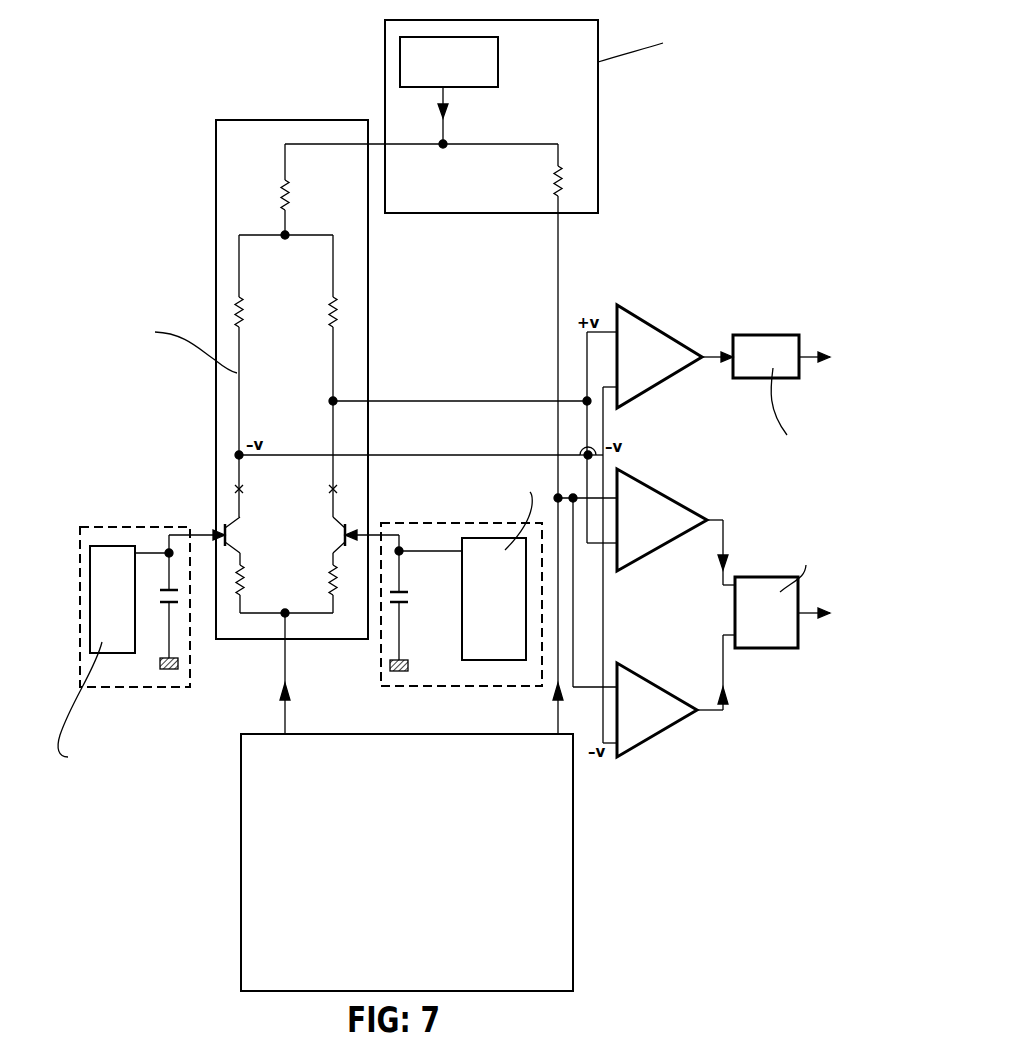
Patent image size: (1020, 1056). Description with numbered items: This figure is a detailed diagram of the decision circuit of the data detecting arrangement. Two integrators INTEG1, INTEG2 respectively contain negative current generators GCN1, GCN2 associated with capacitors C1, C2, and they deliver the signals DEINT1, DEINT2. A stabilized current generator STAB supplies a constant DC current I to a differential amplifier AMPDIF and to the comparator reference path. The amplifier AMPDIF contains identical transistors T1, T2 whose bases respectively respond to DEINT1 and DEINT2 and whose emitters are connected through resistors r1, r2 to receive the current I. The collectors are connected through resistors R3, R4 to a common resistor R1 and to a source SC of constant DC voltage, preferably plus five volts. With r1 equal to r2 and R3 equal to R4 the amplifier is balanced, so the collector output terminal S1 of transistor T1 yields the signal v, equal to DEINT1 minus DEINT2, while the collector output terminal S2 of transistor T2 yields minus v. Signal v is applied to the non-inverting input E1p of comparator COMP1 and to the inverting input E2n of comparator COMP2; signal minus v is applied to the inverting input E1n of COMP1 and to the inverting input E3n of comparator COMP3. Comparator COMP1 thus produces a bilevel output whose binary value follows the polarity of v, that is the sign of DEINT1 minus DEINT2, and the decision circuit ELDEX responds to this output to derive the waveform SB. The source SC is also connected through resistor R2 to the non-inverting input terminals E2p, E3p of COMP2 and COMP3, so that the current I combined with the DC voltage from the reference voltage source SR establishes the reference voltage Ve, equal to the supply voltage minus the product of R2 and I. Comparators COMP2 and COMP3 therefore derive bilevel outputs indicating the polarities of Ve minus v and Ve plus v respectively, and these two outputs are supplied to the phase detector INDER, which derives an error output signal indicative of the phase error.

The reference voltage source SR is at (598, 118).
The source of constant DC voltage SC is at (498, 76).
The common resistor R1 is at (298, 189).
The resistor R2 is at (570, 439).
The resistor R3 is at (345, 318).
The resistor R4 is at (251, 345).
The differential amplifier AMPDIF is at (216, 408).
The output signal v is at (460, 393).
The collector output terminal S1 is at (344, 489).
The collector output terminal S2 is at (250, 489).
The transistor T1 is at (355, 535).
The transistor T2 is at (216, 535).
The emitter resistor r1 is at (251, 583).
The emitter resistor r2 is at (322, 583).
The constant DC current I is at (425, 673).
The integrator output signal DEINT1 is at (457, 595).
The integrator output signal DEINT2 is at (135, 594).
The negative current generator GCN1 is at (491, 559).
The negative current generator GCN2 is at (111, 662).
The integrator INTEG1 is at (428, 687).
The integrator INTEG2 is at (97, 688).
The capacitor C1 is at (426, 603).
The capacitor C2 is at (156, 602).
The stabilized current generator STAB is at (573, 893).
The reference voltage Ve is at (587, 579).
The comparator COMP1 is at (736, 350).
The comparator COMP2 is at (716, 527).
The comparator COMP3 is at (682, 696).
The non-inverting input E1p is at (610, 290).
The inverting input E1n is at (617, 408).
The non-inverting input terminal E2p is at (617, 469).
The inverting input terminal E2n is at (617, 571).
The non-inverting input terminal E3p is at (617, 663).
The inverting input terminal E3n is at (617, 757).
The waveform SB is at (817, 365).
The decision circuit ELDEX is at (785, 350).
The phase detector INDER is at (812, 622).